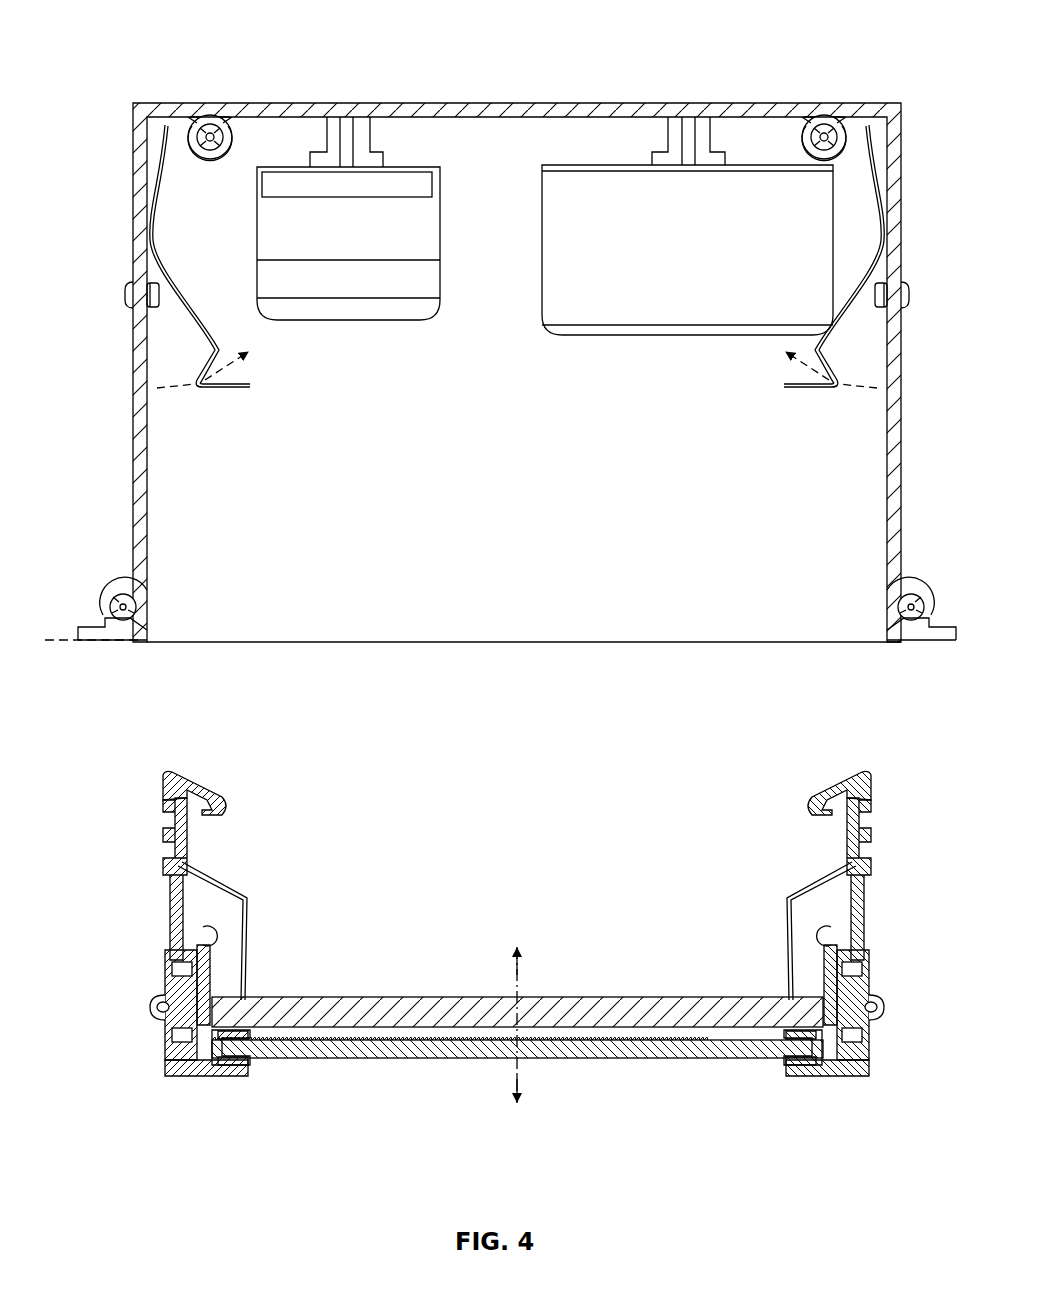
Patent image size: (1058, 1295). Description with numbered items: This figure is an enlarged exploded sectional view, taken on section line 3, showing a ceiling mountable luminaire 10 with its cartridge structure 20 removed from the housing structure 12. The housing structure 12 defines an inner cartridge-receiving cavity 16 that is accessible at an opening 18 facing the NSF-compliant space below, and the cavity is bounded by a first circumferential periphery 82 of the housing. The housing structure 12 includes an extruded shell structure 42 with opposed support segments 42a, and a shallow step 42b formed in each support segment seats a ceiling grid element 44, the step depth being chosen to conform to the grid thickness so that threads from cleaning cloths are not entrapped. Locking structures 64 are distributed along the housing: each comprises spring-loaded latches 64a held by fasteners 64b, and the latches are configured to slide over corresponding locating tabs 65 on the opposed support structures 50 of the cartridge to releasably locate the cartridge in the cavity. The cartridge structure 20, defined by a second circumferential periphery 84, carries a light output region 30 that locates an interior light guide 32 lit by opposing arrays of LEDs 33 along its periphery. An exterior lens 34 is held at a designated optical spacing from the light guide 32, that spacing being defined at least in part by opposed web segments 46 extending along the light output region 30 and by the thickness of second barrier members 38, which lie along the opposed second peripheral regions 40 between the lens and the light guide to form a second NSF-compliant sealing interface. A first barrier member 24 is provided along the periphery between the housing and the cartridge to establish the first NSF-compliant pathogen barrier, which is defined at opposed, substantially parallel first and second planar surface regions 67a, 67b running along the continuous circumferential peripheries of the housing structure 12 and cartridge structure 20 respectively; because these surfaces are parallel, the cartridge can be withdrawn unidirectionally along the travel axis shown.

The luminaire structure 10 is at (930, 170).
The housing structure 12 is at (122, 150).
The cartridge-receiving cavity 16 is at (557, 572).
The opening 18 is at (770, 616).
The cartridge structure 20 is at (126, 800).
The first barrier member 24 is at (146, 1012).
The section line 3 is at (846, 995).
The light output region 30 is at (548, 962).
The light guide 32 is at (415, 998).
The LEDs 33 is at (198, 978).
The exterior lens 34 is at (582, 1052).
The second barrier member 38 is at (257, 1070).
The second peripheral regions 40 is at (836, 1058).
The shell structure 42 is at (904, 126).
The support segments 42a is at (944, 616).
The step 42b is at (910, 650).
The ceiling grid element 44 is at (68, 634).
The web segments 46 is at (232, 1026).
The support structure 50 is at (180, 1080).
The locking structure 64 is at (278, 375).
The spring-loaded latches 64a is at (222, 402).
The fasteners 64b is at (124, 300).
The locating tabs 65 is at (237, 795).
The first planar surface region 67a is at (168, 558).
The second planar surface region 67b is at (162, 857).
The first circumferential periphery 82 is at (152, 588).
The second circumferential periphery 84 is at (166, 788).